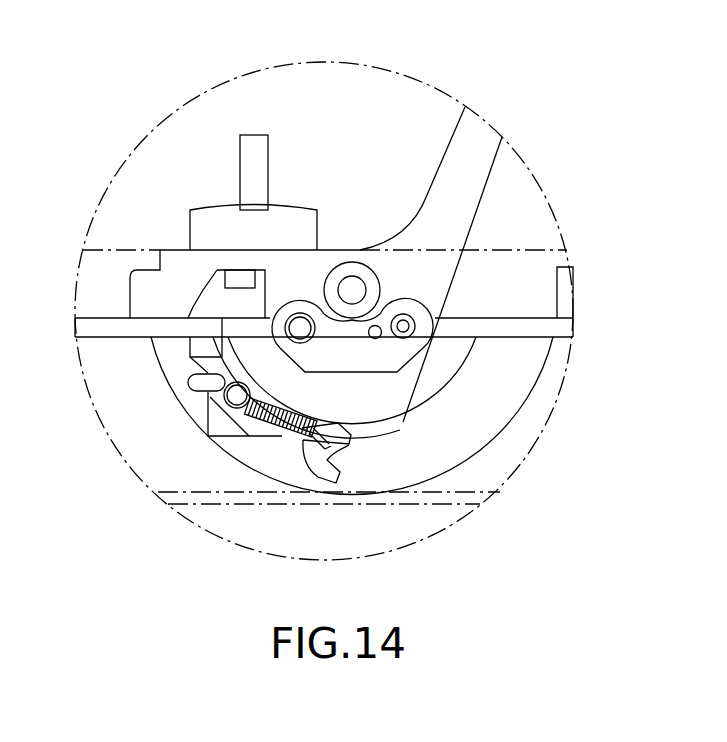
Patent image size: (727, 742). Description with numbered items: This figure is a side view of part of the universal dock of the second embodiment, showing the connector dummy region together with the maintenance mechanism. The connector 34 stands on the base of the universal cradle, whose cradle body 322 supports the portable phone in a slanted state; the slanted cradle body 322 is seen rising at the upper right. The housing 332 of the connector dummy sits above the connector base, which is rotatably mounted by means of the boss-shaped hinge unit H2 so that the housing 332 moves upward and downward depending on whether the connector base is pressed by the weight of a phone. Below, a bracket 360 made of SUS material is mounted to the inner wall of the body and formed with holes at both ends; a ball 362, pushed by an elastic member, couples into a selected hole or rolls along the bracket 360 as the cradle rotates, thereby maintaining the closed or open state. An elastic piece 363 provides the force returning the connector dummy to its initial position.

The connector 34 is at (253, 138).
The hinge unit H2 is at (352, 290).
The cradle body 322 is at (477, 133).
The housing 332 is at (215, 220).
The bracket 360 is at (400, 353).
The ball 362 is at (210, 388).
The elastic piece 363 is at (277, 443).